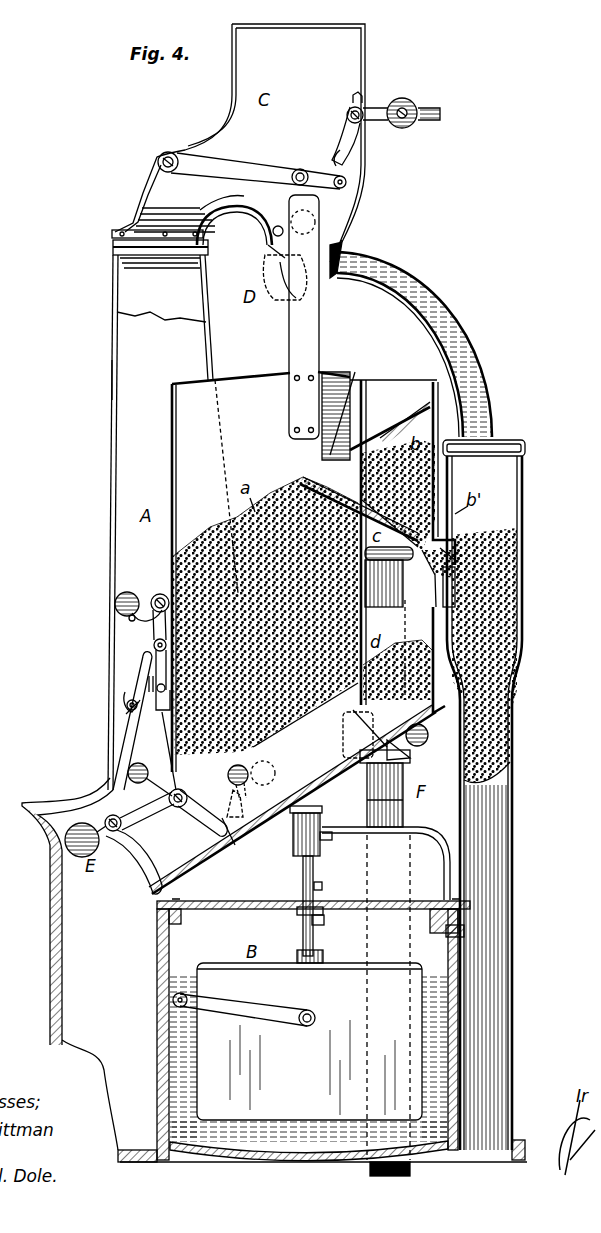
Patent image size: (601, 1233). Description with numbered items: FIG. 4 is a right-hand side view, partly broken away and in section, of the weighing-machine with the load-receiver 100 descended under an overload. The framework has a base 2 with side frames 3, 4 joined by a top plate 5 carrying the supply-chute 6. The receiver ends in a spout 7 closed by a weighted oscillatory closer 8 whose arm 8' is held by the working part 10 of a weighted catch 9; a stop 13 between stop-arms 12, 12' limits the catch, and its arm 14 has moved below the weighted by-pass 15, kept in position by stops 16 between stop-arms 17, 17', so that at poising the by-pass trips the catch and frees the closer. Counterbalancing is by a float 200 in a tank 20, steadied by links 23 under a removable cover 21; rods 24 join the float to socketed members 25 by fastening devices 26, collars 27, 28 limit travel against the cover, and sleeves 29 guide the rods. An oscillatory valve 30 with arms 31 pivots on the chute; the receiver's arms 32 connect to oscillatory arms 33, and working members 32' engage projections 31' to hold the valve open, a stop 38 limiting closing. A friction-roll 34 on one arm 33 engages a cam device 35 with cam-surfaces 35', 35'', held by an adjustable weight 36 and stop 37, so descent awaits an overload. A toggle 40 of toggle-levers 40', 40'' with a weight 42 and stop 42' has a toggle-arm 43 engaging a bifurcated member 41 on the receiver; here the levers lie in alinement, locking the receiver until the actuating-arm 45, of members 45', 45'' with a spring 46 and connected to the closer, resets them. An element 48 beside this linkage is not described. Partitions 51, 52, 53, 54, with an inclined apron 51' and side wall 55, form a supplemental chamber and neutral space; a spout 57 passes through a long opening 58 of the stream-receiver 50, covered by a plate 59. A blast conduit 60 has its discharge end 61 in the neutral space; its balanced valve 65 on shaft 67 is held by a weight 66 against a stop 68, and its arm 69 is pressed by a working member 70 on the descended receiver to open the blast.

The base 2 is at (50, 886).
The side frame 3 is at (125, 273).
The side frame 4 is at (115, 372).
The top plate 5 is at (118, 229).
The supply-chute 6 is at (340, 238).
The spout formation 7 is at (185, 876).
The weighted oscillatory closer 8 is at (133, 867).
The closer arm 8' is at (98, 799).
The weighted catch 9 is at (162, 804).
The working part 10 is at (128, 768).
The stop-arm 12 is at (147, 811).
The stop-arm 12' is at (187, 780).
The stop 13 is at (170, 778).
The catch arm 14 is at (204, 826).
The weighted by-pass 15 is at (236, 842).
The stops 16 is at (249, 807).
The stop-arm 17 is at (222, 782).
The stop-arm 17' is at (276, 783).
The tank 20 is at (165, 1042).
The removable cover 21 is at (262, 905).
The links 23 is at (262, 1012).
The rods 24 is at (315, 860).
The socketed members 25 is at (294, 832).
The fastening devices 26 is at (334, 834).
The fixed collar 27 is at (324, 954).
The adjustable collar 28 is at (322, 886).
The sleeves 29 is at (324, 914).
The oscillatory valve 30 is at (284, 296).
The valve arms 31 is at (359, 248).
The projection 31' is at (284, 202).
The receiver arms 32 is at (287, 317).
The working member 32' is at (256, 244).
The oscillatory arms 33 is at (232, 165).
The friction-roll 34 is at (346, 186).
The cam device 35 is at (376, 136).
The cam-surface 35' is at (335, 111).
The cam-surface 35'' is at (326, 147).
The adjustable weight 36 is at (410, 104).
The stop 37 is at (368, 97).
The stop 38 is at (280, 266).
The toggle 40 is at (154, 590).
The toggle-lever 40' is at (121, 621).
The toggle-lever 40'' is at (94, 635).
The bifurcated working member 41 is at (154, 670).
The weight 42 is at (127, 583).
The stop 42' is at (103, 605).
The toggle-arm 43 is at (144, 680).
The actuating-arm 45 is at (114, 721).
The arm member 45' is at (107, 715).
The arm member 45'' is at (109, 696).
The spring 46 is at (125, 703).
The pin 48 is at (154, 642).
The stream-receiver conduit 50 is at (517, 518).
The partition 51 is at (354, 496).
The inclined apron 51' is at (350, 405).
The partition 52 is at (265, 616).
The partition 53 is at (437, 440).
The partition 54 is at (423, 430).
The side wall 55 is at (383, 427).
The spout 57 is at (458, 577).
The opening 58 is at (452, 527).
The closer plate 59 is at (438, 530).
The blast conduit 60 is at (406, 820).
The discharge end 61 is at (412, 560).
The balanced cut-off valve 65 is at (388, 724).
The weight 66 is at (430, 735).
The valve shaft 67 is at (360, 716).
The stop 68 is at (404, 771).
The valve arm 69 is at (366, 812).
The working member 70 is at (355, 740).
The load-receiver 100 is at (180, 446).
The float 200 is at (309, 1041).